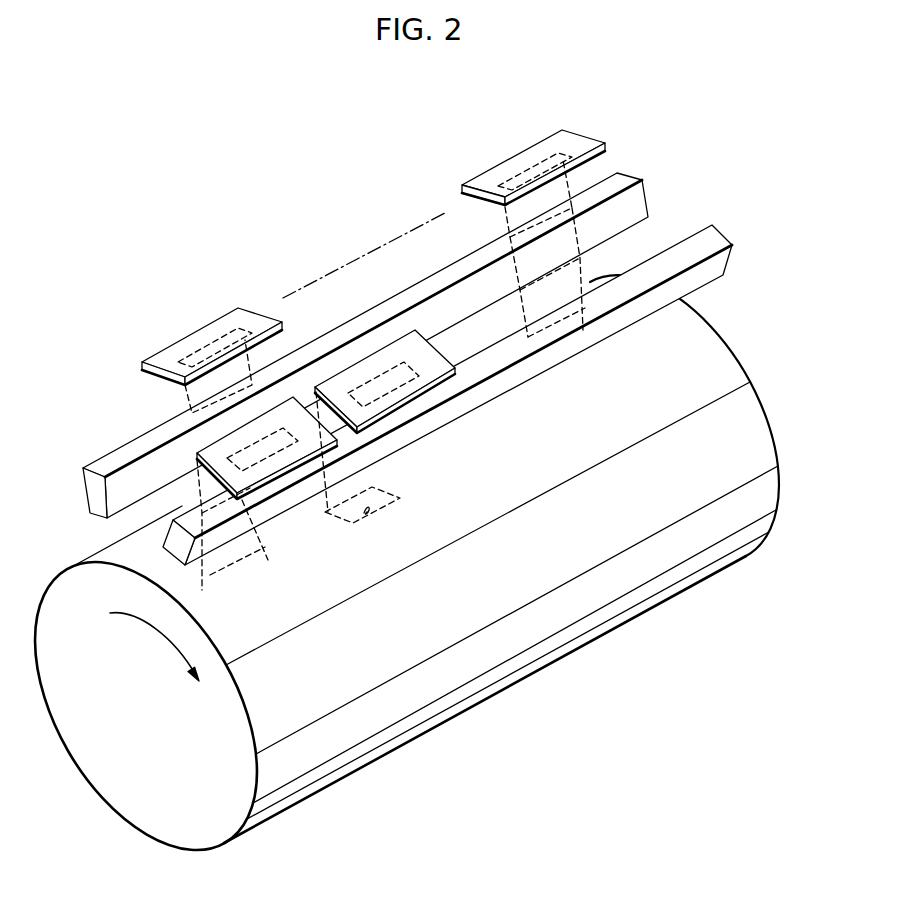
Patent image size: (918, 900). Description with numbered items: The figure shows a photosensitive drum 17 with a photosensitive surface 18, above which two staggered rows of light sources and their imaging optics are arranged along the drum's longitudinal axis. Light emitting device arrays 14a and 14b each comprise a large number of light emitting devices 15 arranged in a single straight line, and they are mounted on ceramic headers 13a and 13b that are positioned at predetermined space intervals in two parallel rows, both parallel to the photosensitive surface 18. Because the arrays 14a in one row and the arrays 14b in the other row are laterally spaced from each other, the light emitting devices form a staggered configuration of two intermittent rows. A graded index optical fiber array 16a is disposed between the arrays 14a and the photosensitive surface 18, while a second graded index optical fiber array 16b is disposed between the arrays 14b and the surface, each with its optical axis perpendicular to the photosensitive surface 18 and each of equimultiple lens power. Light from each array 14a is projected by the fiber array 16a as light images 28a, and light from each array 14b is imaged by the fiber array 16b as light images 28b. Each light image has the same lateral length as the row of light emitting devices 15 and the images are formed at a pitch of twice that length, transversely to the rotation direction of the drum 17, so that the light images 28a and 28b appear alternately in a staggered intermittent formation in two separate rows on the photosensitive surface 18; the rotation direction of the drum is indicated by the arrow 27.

The ceramic header 13a is at (373, 227).
The ceramic header 13b is at (371, 446).
The light emitting device array 14a is at (374, 229).
The light emitting device array 14b is at (365, 468).
The light emitting device 15 is at (219, 438).
The graded index optical fiber array 16a is at (365, 345).
The graded index optical fiber array 16b is at (170, 556).
The photosensitive drum 17 is at (151, 698).
The photosensitive surface 18 is at (423, 559).
The drum axis 27 is at (154, 695).
The light image 28a is at (583, 330).
The light image 28b is at (238, 568).